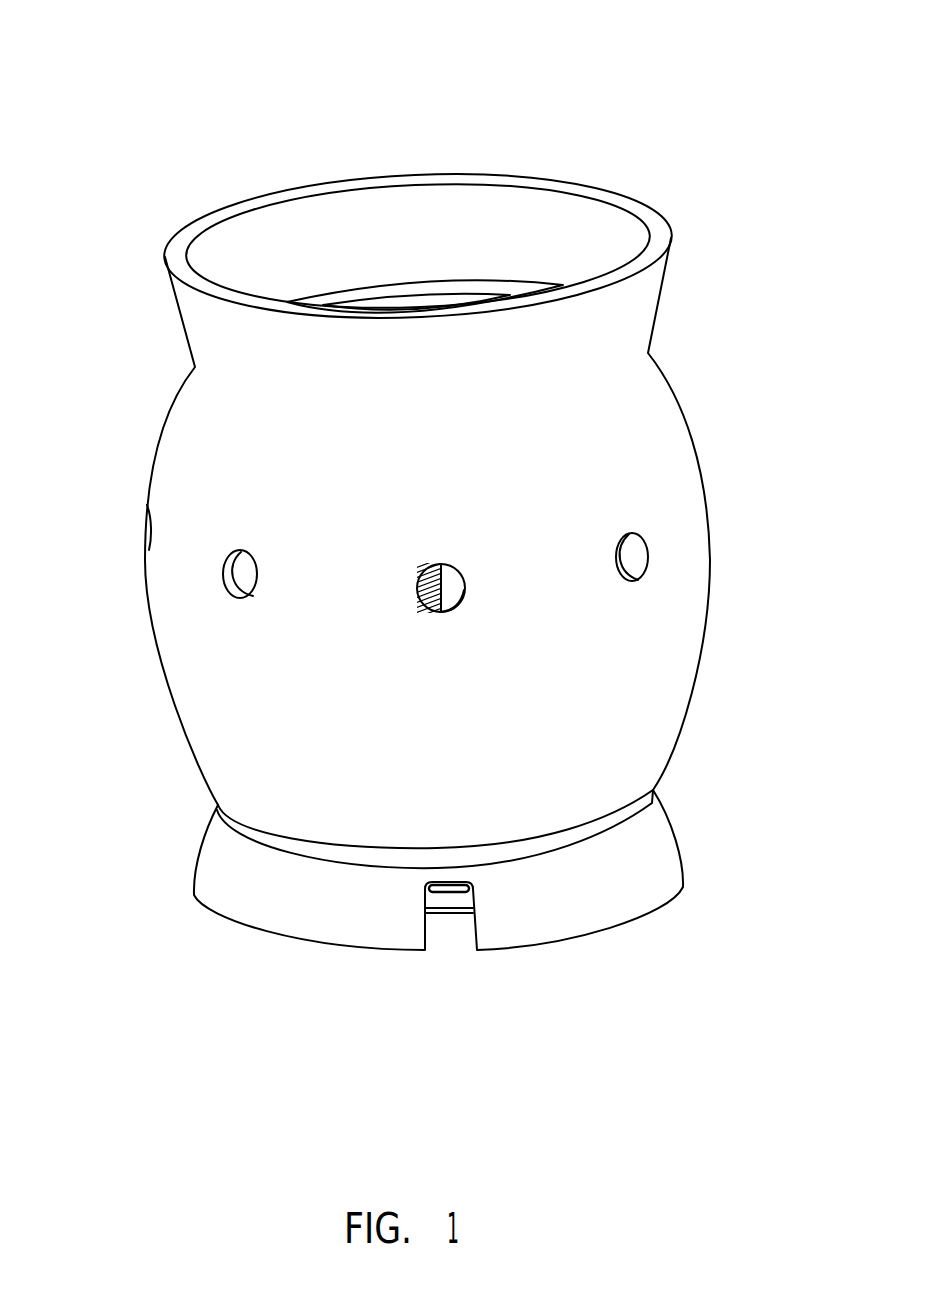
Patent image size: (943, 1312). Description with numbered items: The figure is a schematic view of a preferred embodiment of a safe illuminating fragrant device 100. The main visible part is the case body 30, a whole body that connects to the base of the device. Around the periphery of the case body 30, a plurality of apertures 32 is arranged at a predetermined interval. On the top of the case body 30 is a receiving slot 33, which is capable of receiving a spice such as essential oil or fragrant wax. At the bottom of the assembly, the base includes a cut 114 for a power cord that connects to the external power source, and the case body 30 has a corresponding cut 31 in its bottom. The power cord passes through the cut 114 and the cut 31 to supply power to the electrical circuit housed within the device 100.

The safe illuminating fragrant device 100 is at (266, 106).
The case body 30 is at (263, 693).
The cut 31 is at (478, 930).
The apertures 32 is at (648, 548).
The receiving slot 33 is at (536, 230).
The cut 114 is at (442, 893).